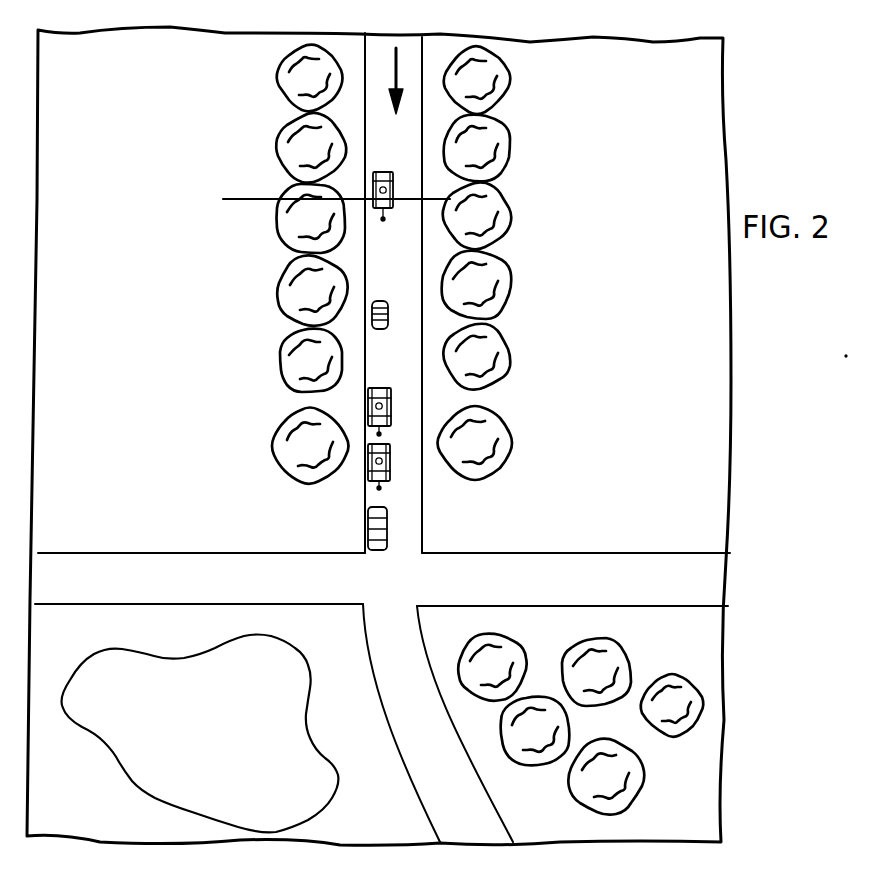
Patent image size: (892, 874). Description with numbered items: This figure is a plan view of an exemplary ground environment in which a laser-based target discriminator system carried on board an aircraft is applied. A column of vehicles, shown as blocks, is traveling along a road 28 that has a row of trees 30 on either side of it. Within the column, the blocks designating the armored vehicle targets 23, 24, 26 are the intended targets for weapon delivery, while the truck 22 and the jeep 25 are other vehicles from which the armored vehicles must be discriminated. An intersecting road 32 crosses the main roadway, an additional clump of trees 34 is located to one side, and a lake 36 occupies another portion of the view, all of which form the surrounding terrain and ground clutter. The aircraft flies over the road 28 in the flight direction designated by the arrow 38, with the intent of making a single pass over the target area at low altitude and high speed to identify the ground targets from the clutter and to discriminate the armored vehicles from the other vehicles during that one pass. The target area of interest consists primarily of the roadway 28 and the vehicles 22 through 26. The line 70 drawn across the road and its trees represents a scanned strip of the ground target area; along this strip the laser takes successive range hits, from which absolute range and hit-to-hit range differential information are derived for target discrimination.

The truck 22 is at (387, 530).
The armored vehicle target 23 is at (390, 463).
The armored vehicle target 24 is at (392, 401).
The jeep 25 is at (381, 331).
The armored vehicle target 26 is at (393, 187).
The road 28 is at (398, 286).
The row of trees 30 is at (283, 130).
The intersecting road 32 is at (530, 572).
The clump of trees 34 is at (543, 692).
The lake 36 is at (326, 666).
The arrow 38 is at (402, 80).
The line 70 is at (228, 199).